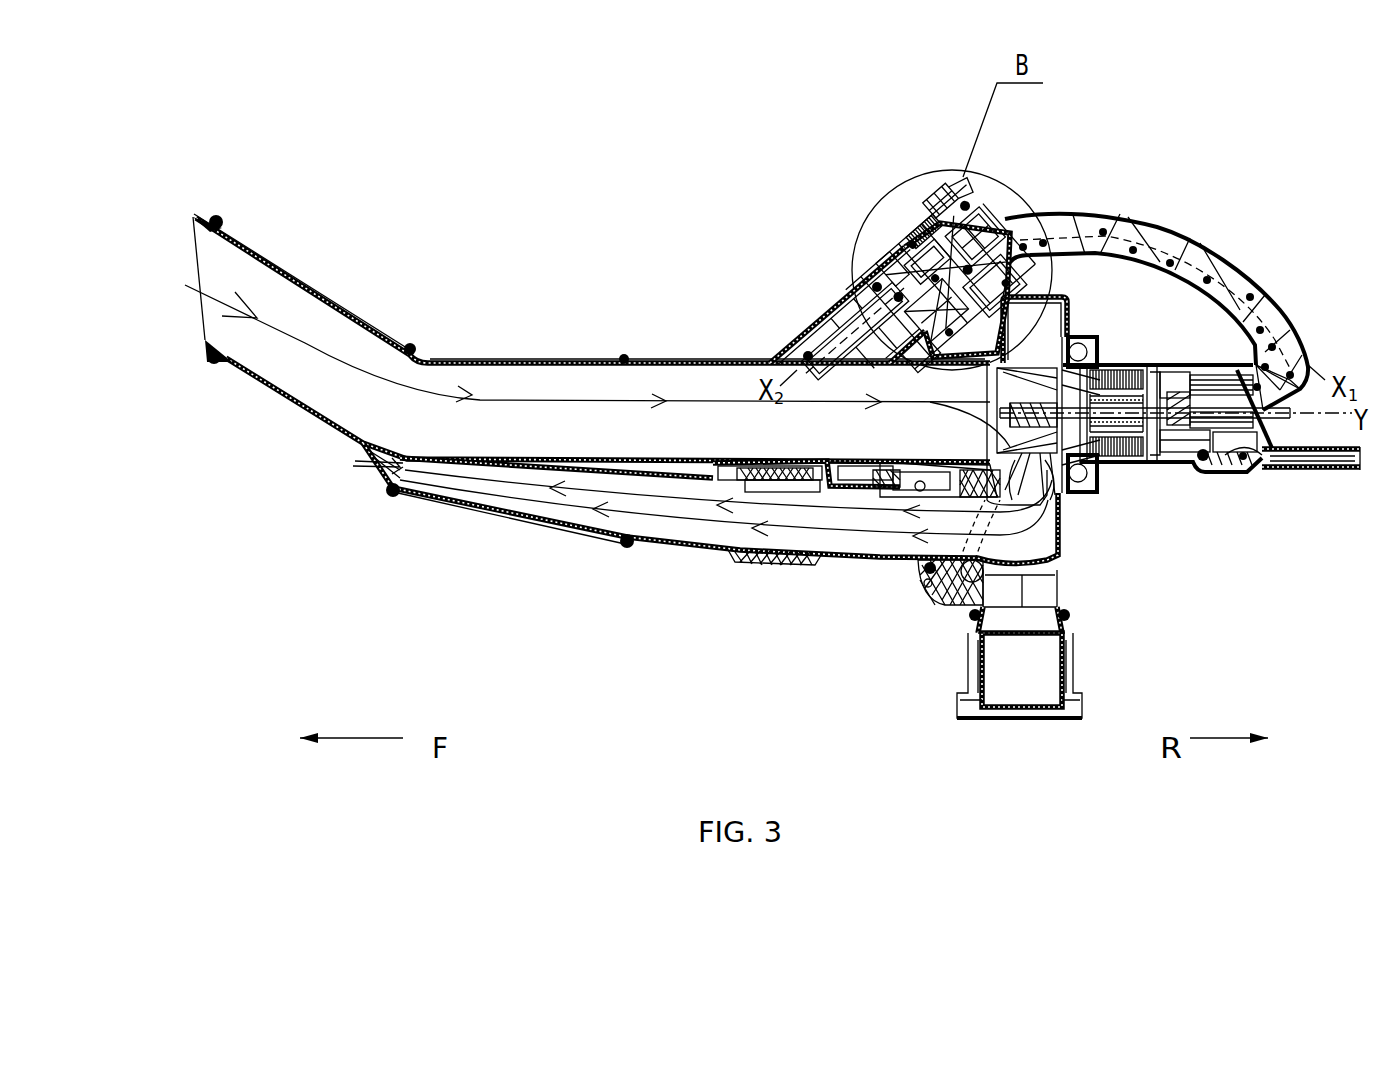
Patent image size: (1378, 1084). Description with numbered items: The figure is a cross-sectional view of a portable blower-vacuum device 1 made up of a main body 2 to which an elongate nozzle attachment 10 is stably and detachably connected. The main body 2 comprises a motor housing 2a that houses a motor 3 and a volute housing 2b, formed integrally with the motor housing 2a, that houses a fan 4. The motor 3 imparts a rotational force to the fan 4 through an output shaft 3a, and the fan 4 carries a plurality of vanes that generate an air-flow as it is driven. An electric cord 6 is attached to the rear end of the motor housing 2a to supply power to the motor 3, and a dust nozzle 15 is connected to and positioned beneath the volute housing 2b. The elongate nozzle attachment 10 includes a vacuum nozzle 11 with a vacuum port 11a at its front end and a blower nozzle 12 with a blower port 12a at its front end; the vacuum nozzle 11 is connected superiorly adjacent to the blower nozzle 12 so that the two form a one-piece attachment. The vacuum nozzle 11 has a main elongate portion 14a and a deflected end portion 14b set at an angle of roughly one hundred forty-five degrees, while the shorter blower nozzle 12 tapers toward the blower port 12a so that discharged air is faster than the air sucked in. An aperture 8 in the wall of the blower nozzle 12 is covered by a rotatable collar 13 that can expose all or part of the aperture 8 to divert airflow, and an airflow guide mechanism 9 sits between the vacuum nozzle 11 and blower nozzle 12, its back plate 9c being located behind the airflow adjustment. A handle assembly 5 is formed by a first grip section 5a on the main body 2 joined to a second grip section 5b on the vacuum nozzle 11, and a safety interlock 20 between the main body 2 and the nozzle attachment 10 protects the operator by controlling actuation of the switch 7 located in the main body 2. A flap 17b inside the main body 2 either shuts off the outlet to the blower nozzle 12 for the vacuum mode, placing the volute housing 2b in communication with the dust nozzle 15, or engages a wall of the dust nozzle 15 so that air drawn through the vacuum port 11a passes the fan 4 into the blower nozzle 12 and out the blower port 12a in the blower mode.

The portable blower-vacuum device 1 is at (712, 226).
The main body 2 is at (1080, 337).
The motor housing 2a is at (1173, 469).
The volute housing 2b is at (1040, 297).
The motor 3 is at (1130, 357).
The output shaft 3a is at (1117, 469).
The fan 4 is at (1067, 497).
The handle assembly 5 is at (1213, 237).
The first grip section 5a is at (1230, 270).
The second grip section 5b is at (795, 337).
The electric cord 6 is at (1300, 460).
The switch 7 is at (992, 237).
The aperture 8 is at (787, 494).
The airflow guide mechanism 9 is at (800, 460).
The back plate 9c is at (837, 493).
The elongate nozzle attachment 10 is at (513, 555).
The vacuum nozzle 11 is at (423, 357).
The vacuum port 11a is at (200, 303).
The blower nozzle 12 is at (660, 545).
The blower port 12a is at (367, 472).
The rotatable collar 13 is at (755, 560).
The main elongate portion 14a is at (653, 362).
The deflected end portion 14b is at (330, 307).
The dust nozzle 15 is at (1068, 632).
The flap 17b is at (1040, 575).
The safety interlock 20 is at (890, 215).